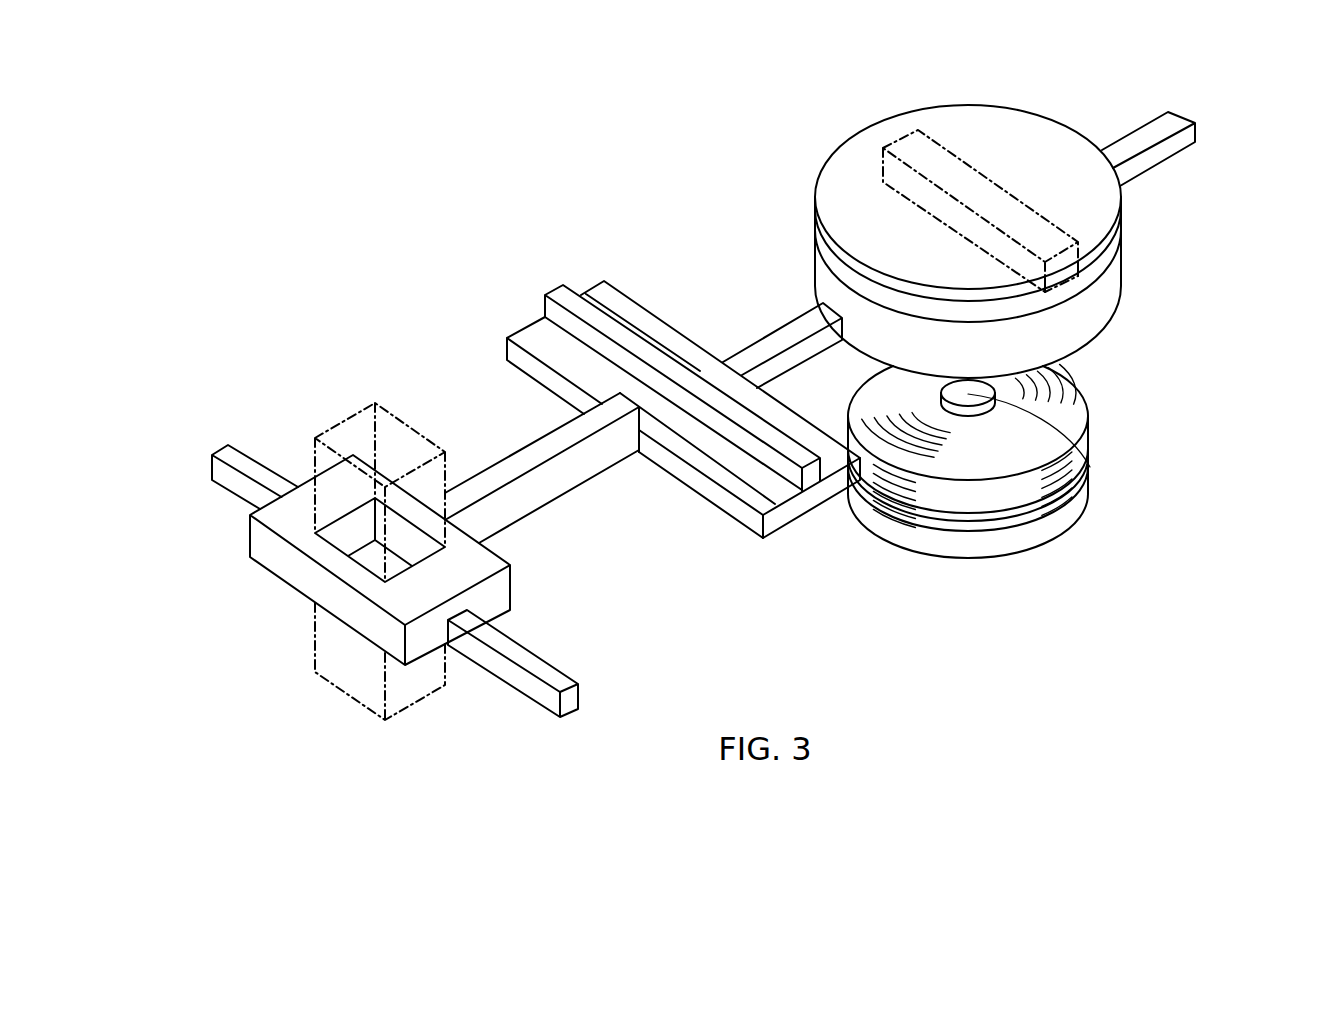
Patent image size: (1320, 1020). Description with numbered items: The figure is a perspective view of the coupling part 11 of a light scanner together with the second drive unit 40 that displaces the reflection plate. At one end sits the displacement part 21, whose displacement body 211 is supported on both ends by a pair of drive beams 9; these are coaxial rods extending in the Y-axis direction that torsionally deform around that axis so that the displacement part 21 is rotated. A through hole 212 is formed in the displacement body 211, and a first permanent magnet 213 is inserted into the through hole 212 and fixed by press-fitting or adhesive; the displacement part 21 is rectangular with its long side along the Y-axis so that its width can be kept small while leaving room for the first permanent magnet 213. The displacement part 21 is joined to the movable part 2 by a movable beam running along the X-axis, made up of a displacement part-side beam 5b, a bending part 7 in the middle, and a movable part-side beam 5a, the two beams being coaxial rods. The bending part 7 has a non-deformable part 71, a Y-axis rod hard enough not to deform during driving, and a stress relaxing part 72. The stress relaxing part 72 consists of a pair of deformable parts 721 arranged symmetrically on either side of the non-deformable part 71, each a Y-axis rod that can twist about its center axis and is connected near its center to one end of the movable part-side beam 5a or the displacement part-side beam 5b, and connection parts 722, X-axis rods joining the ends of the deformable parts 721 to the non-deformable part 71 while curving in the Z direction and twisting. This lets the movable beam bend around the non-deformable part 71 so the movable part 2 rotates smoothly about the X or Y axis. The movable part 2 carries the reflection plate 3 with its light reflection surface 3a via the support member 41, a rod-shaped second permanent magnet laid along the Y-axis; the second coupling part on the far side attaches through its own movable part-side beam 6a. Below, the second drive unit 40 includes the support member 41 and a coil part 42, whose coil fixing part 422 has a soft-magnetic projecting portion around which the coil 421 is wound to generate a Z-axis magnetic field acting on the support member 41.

The coupling part 11 is at (504, 172).
The displacement part 21 is at (298, 389).
The displacement body 211 is at (305, 494).
The through hole 212 is at (352, 535).
The first permanent magnet 213 is at (367, 407).
The drive beam 9 is at (230, 457).
The movable part-side beam 5a is at (775, 342).
The displacement part-side beam 5b is at (510, 462).
The bending part 7 is at (535, 257).
The non-deformable part 71 is at (743, 420).
The stress relaxing part 72 is at (731, 582).
The deformable part 721 is at (764, 513).
The connection part 722 is at (833, 485).
The reflection plate 3 is at (1117, 238).
The light reflection surface 3a is at (1050, 142).
The movable part 2 is at (1107, 280).
The movable part-side beam 6a is at (1170, 122).
The second drive unit 40 is at (1226, 392).
The support member 41 is at (1077, 278).
The coil part 42 is at (1181, 436).
The coil 421 is at (1083, 443).
The coil fixing part 422 is at (1100, 493).